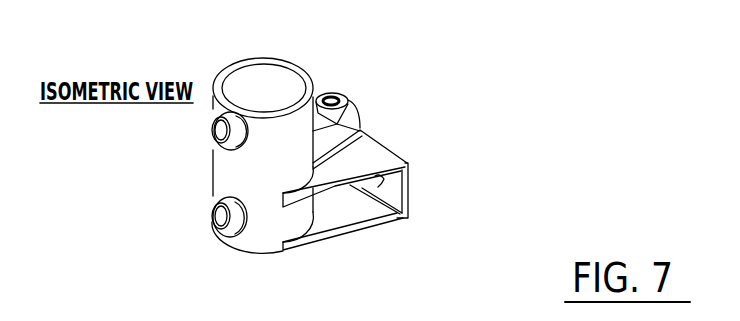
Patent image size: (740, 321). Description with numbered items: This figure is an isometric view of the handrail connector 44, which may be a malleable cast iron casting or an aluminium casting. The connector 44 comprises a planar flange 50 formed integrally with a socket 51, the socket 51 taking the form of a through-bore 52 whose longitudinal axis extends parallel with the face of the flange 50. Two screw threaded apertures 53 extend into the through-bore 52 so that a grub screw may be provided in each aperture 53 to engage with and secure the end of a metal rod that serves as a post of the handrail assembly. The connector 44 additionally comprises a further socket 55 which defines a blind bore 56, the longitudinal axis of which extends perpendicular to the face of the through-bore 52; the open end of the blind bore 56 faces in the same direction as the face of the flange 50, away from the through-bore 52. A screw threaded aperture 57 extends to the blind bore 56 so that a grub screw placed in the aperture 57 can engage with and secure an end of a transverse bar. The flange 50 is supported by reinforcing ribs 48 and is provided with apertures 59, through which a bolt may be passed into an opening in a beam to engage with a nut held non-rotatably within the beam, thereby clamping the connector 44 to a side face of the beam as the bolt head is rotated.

The handrail connector 44 is at (198, 188).
The reinforcing ribs 48 is at (408, 163).
The planar flange 50 is at (412, 192).
The socket 51 is at (215, 166).
The through-bore 52 is at (279, 80).
The screw threaded apertures 53 is at (211, 128).
The socket 55 is at (358, 120).
The blind bore 56 is at (361, 97).
The screw threaded aperture 57 is at (357, 95).
The apertures 59 is at (406, 218).